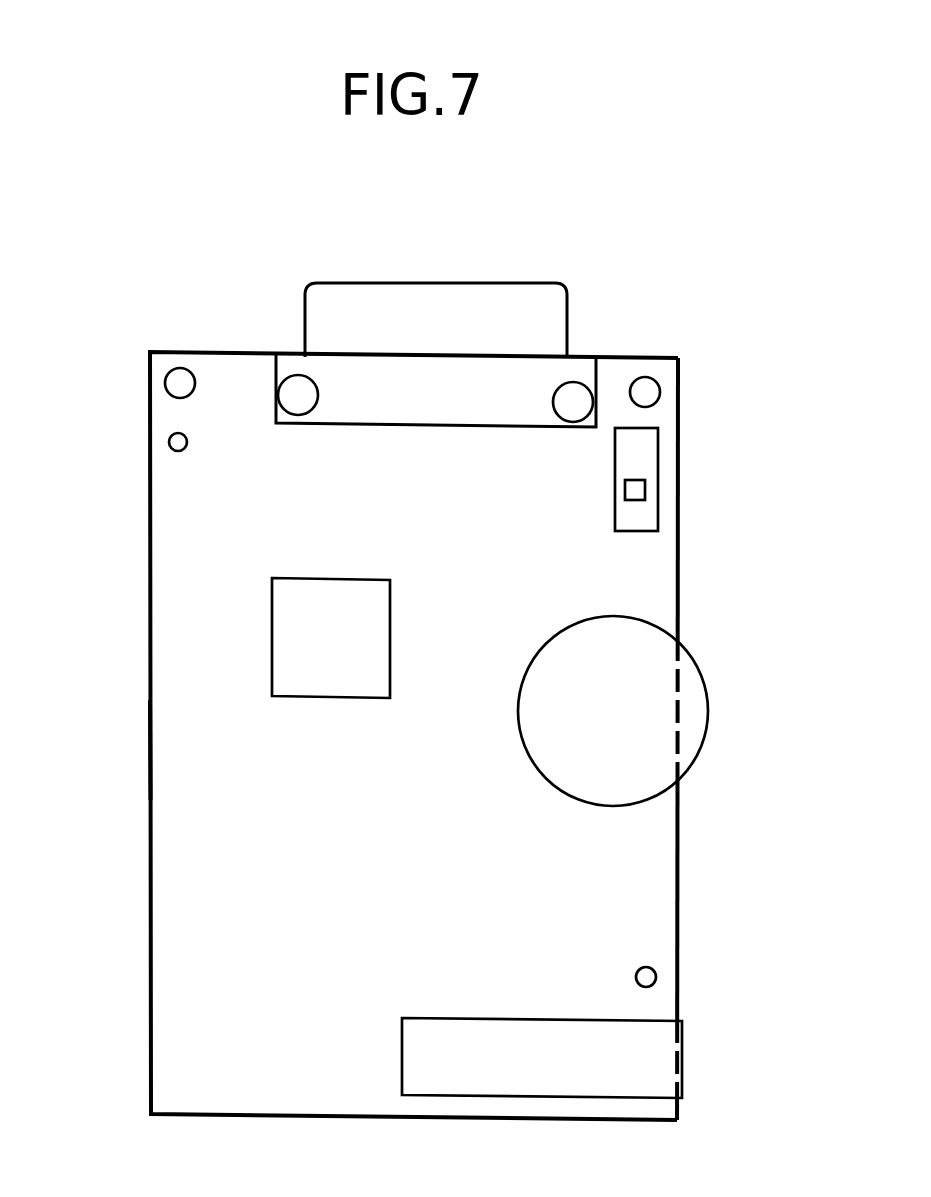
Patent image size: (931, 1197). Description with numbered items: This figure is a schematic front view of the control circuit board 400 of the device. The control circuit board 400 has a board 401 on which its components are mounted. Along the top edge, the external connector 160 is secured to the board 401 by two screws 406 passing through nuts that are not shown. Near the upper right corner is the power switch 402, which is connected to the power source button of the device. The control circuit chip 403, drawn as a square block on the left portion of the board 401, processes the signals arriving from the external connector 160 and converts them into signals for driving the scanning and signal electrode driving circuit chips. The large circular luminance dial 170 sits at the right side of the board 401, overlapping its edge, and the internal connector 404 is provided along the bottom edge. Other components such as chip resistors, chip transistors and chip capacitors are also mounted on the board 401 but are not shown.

The external connector 160 is at (495, 307).
The luminance dial 170 is at (690, 710).
The control circuit board 400 is at (143, 630).
The board 401 is at (150, 748).
The power switch 402 is at (647, 455).
The control circuit chip 403 is at (312, 600).
The internal connector 404 is at (657, 1063).
The screws 406 is at (303, 400).